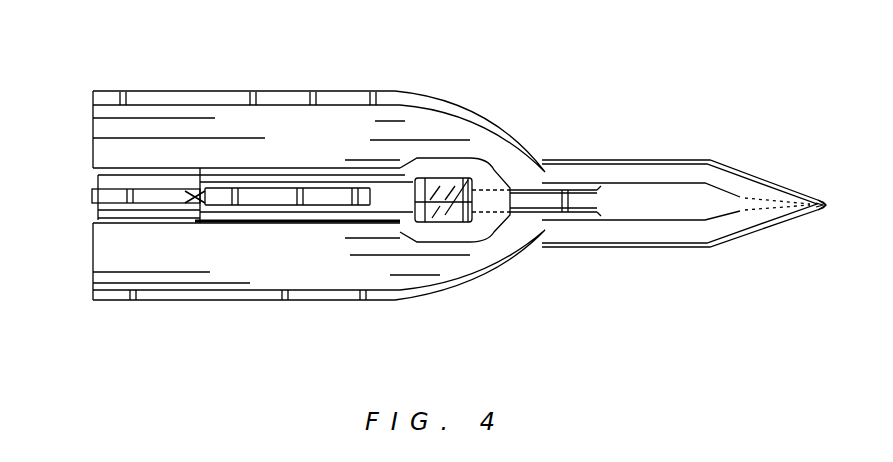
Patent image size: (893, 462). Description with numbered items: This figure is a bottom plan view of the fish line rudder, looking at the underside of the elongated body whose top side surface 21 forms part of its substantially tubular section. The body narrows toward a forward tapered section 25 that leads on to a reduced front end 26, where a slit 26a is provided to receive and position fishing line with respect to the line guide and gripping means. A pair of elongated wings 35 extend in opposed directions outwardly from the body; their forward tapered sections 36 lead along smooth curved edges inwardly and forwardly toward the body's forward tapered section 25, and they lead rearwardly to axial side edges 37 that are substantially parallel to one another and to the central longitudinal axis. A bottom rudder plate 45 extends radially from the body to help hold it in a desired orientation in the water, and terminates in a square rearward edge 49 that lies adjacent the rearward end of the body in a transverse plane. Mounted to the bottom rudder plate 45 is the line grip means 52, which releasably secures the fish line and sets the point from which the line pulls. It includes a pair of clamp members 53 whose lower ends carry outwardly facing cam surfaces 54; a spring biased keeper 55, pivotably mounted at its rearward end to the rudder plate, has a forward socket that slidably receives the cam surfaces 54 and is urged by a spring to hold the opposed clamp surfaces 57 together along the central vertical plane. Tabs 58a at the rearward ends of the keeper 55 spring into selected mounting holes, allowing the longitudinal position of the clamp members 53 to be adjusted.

The top side surface 21 is at (656, 197).
The forward tapered section 25 is at (750, 207).
The reduced front end 26 is at (827, 210).
The slit 26a is at (820, 200).
The elongated wings 35 is at (92, 100).
The forward tapered sections 36 is at (493, 127).
The axial side edges 37 is at (207, 97).
The bottom rudder plate 45 is at (265, 190).
The square rearward edge 49 is at (90, 195).
The line grip means 52 is at (491, 164).
The clamp members 53 is at (414, 220).
The cam surfaces 54 is at (434, 178).
The spring biased keeper 55 is at (403, 178).
The clamp surfaces 57 is at (468, 180).
The tabs 58a is at (190, 196).